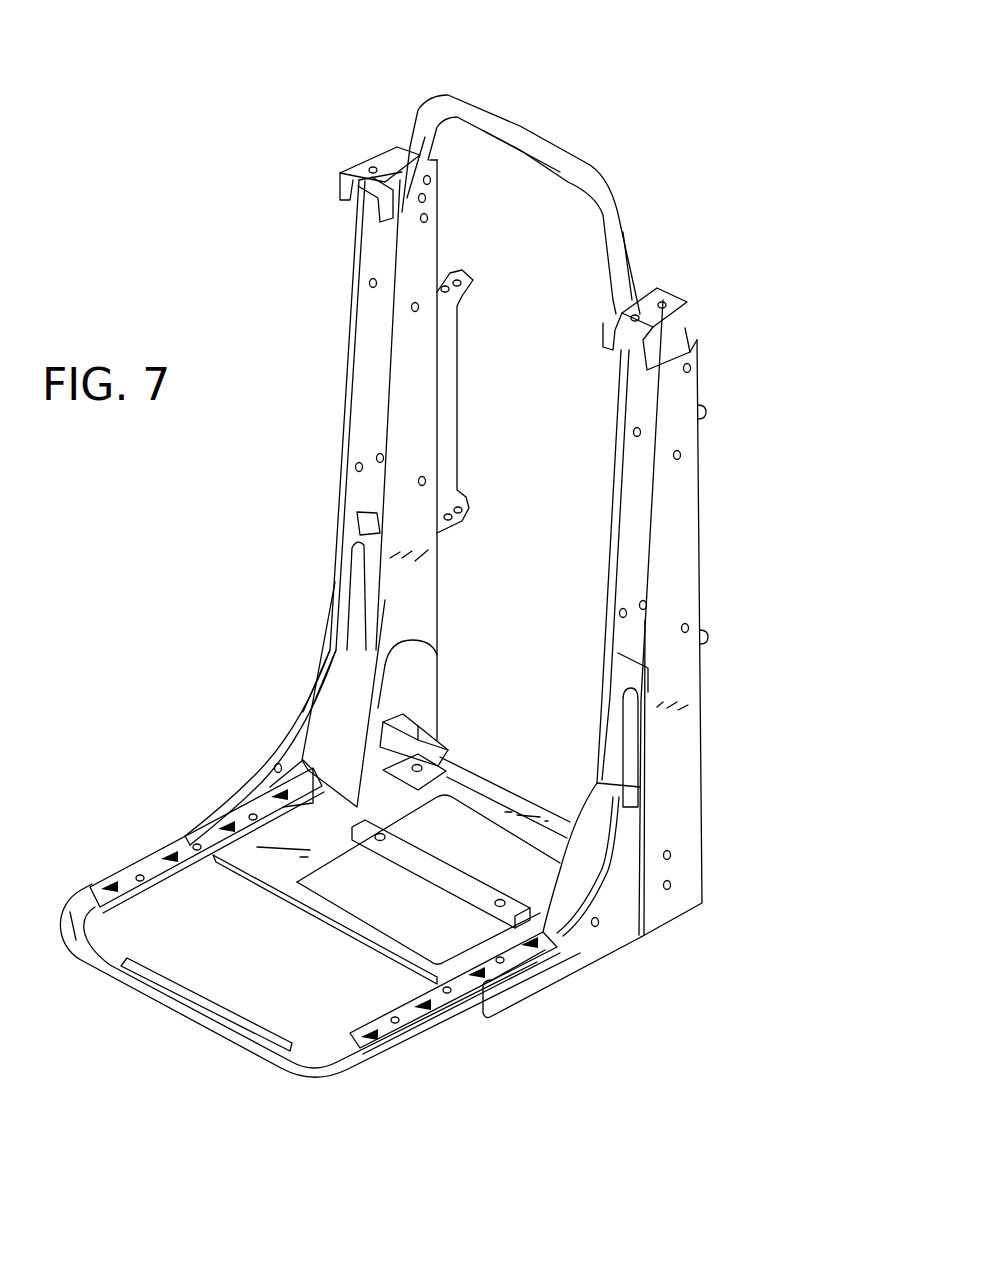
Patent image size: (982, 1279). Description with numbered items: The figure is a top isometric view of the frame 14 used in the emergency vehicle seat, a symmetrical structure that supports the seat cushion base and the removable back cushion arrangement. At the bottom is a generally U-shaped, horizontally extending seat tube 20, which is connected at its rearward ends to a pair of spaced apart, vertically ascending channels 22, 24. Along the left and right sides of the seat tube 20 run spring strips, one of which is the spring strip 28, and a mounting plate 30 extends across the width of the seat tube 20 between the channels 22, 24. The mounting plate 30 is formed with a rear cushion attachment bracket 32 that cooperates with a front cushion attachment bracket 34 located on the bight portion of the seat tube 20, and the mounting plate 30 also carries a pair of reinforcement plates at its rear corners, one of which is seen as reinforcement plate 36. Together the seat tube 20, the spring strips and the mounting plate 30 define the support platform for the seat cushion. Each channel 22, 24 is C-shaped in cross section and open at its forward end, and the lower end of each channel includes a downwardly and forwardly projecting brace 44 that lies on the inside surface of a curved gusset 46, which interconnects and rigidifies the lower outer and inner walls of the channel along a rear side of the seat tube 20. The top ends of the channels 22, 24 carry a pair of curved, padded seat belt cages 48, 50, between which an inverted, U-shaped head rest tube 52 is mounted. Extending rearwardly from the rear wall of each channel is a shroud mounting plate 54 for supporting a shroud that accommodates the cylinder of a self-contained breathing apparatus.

The frame 14 is at (441, 90).
The seat tube 20 is at (330, 1077).
The channel 22 is at (352, 335).
The channel 24 is at (684, 507).
The spring strip 28 is at (150, 868).
The mounting plate 30 is at (333, 940).
The rear cushion attachment bracket 32 is at (423, 857).
The front cushion attachment bracket 34 is at (190, 990).
The reinforcement plate 36 is at (437, 768).
The brace 44 is at (345, 725).
The curved gusset 46 is at (272, 760).
The seat belt cage 48 is at (338, 182).
The seat belt cage 50 is at (678, 323).
The head rest tube 52 is at (580, 168).
The shroud mounting plate 54 is at (478, 280).